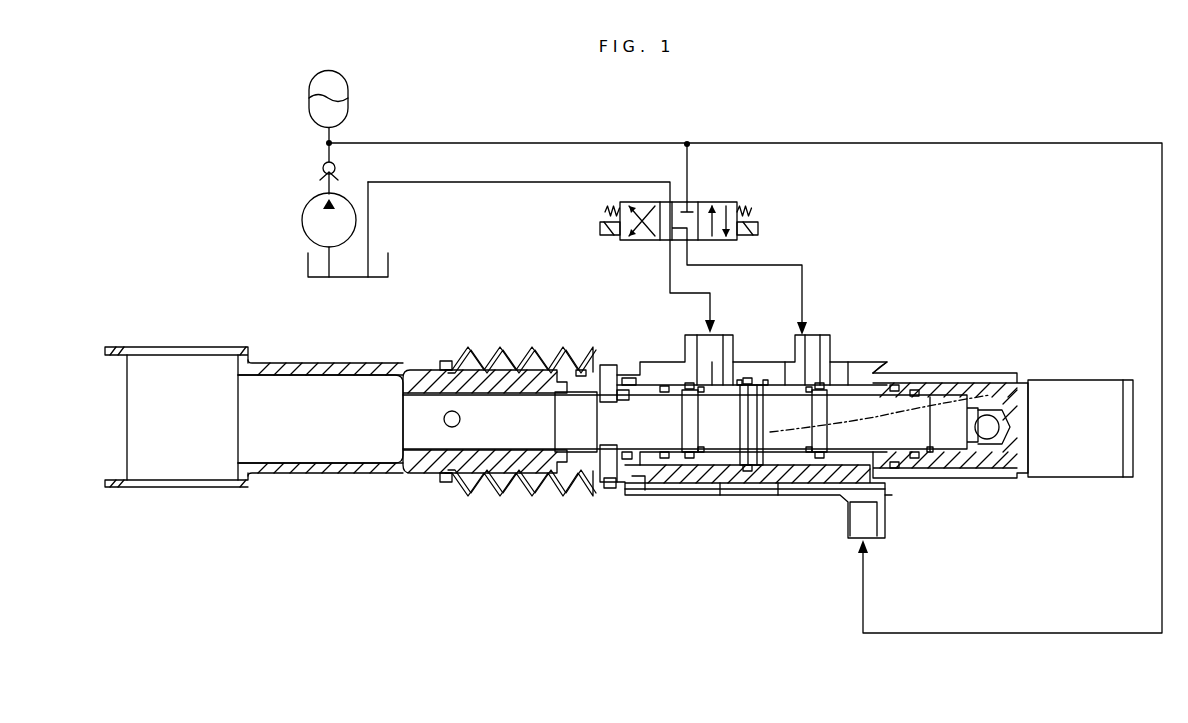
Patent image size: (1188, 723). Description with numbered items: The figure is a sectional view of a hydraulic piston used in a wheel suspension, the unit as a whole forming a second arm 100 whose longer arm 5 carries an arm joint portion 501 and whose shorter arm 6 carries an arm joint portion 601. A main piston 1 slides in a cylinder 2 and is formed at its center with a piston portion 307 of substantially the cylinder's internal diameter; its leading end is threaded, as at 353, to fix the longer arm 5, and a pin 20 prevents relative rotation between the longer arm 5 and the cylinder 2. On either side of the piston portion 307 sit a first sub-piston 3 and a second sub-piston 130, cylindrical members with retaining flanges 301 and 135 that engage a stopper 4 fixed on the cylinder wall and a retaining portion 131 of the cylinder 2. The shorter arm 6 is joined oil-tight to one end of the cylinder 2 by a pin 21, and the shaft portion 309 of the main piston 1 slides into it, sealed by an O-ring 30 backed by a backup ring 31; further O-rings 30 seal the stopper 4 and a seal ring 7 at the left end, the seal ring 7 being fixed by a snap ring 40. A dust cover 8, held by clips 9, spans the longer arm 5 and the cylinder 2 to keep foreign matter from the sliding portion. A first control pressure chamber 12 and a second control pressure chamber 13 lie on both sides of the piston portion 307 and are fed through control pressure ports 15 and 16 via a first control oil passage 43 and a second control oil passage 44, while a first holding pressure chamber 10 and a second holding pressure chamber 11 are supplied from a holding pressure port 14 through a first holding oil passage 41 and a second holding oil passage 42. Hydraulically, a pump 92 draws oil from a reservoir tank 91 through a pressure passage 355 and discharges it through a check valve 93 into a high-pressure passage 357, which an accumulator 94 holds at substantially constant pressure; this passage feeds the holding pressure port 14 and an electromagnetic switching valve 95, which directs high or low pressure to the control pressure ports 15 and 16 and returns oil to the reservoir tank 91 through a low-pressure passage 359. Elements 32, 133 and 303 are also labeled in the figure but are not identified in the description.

The main piston 1 is at (598, 427).
The cylinder 2 is at (757, 494).
The first sub-piston 3 is at (738, 334).
The stopper 4 is at (688, 500).
The longer arm 5 is at (282, 438).
The shorter arm 6 is at (985, 477).
The seal ring 7 is at (612, 357).
The dust cover 8 is at (517, 490).
The clip 9 is at (443, 484).
The first holding pressure chamber 10 is at (662, 478).
The second holding pressure chamber 11 is at (885, 368).
The first control pressure chamber 12 is at (735, 477).
The second control pressure chamber 13 is at (787, 470).
The holding pressure port 14 is at (870, 533).
The control pressure port 15 is at (718, 332).
The control pressure port 16 is at (806, 330).
The pin 20 is at (449, 412).
The pin 21 is at (996, 410).
The O-ring 30 is at (627, 350).
The backup ring 31 is at (580, 357).
The drain port 32 is at (636, 488).
The snap ring 40 is at (600, 350).
The first holding oil passage 41 is at (780, 493).
The second holding oil passage 42 is at (890, 497).
The first control oil passage 43 is at (697, 335).
The second control oil passage 44 is at (826, 333).
The reservoir tank 91 is at (308, 267).
The pump 92 is at (303, 226).
The check valve 93 is at (320, 176).
The accumulator 94 is at (306, 114).
The electromagnetic switching valve 95 is at (738, 206).
The second arm 100 is at (337, 478).
The second sub-piston 130 is at (783, 333).
The retaining portion 131 is at (828, 362).
The passage 133 is at (722, 503).
The retaining flange 135 is at (850, 360).
The retaining flange 301 is at (644, 345).
The seal 303 is at (629, 480).
The piston portion 307 is at (908, 367).
The shaft portion 309 is at (940, 390).
The threaded portion 353 is at (491, 408).
The pressure passage 355 is at (369, 256).
The high-pressure passage 357 is at (606, 145).
The low-pressure passage 359 is at (523, 183).
The arm joint portion 501 is at (171, 489).
The arm joint portion 601 is at (1087, 380).